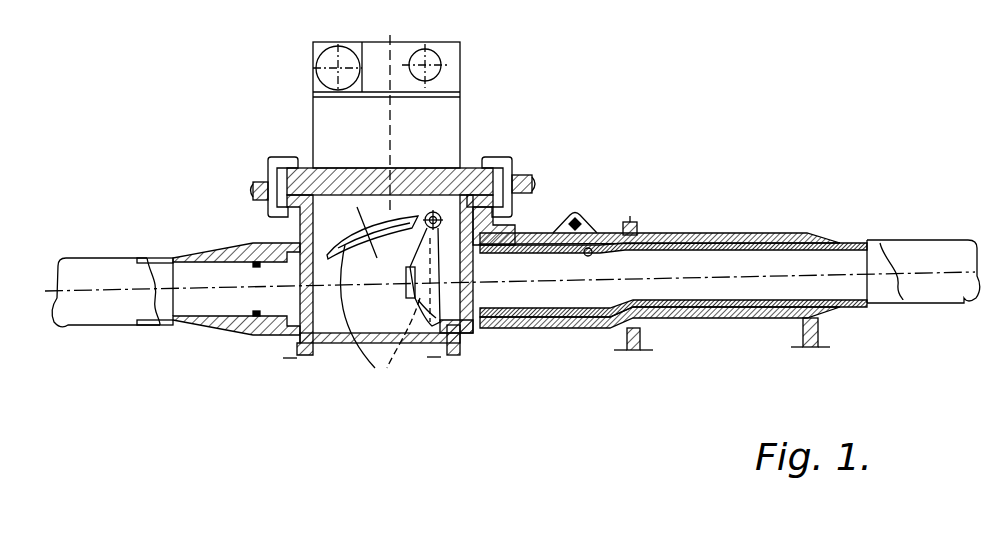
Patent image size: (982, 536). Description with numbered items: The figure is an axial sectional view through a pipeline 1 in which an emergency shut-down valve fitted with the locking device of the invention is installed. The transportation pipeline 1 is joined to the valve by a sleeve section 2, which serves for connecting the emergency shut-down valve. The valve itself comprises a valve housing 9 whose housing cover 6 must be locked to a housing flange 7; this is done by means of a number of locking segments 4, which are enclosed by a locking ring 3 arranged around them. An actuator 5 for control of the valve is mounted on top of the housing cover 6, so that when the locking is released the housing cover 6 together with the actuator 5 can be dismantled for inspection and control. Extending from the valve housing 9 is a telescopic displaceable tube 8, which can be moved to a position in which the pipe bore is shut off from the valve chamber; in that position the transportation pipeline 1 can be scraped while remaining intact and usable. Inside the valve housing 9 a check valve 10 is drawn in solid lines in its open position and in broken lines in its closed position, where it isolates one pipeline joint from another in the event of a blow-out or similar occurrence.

The pipeline 1 is at (98, 267).
The sleeve section 2 is at (240, 243).
The locking ring 3 is at (250, 183).
The locking segments 4 is at (497, 158).
The actuator 5 is at (452, 117).
The housing cover 6 is at (437, 163).
The housing flange 7 is at (495, 172).
The telescopic displaceable tube 8 is at (602, 232).
The valve housing 9 is at (680, 240).
The check valve 10 is at (385, 301).